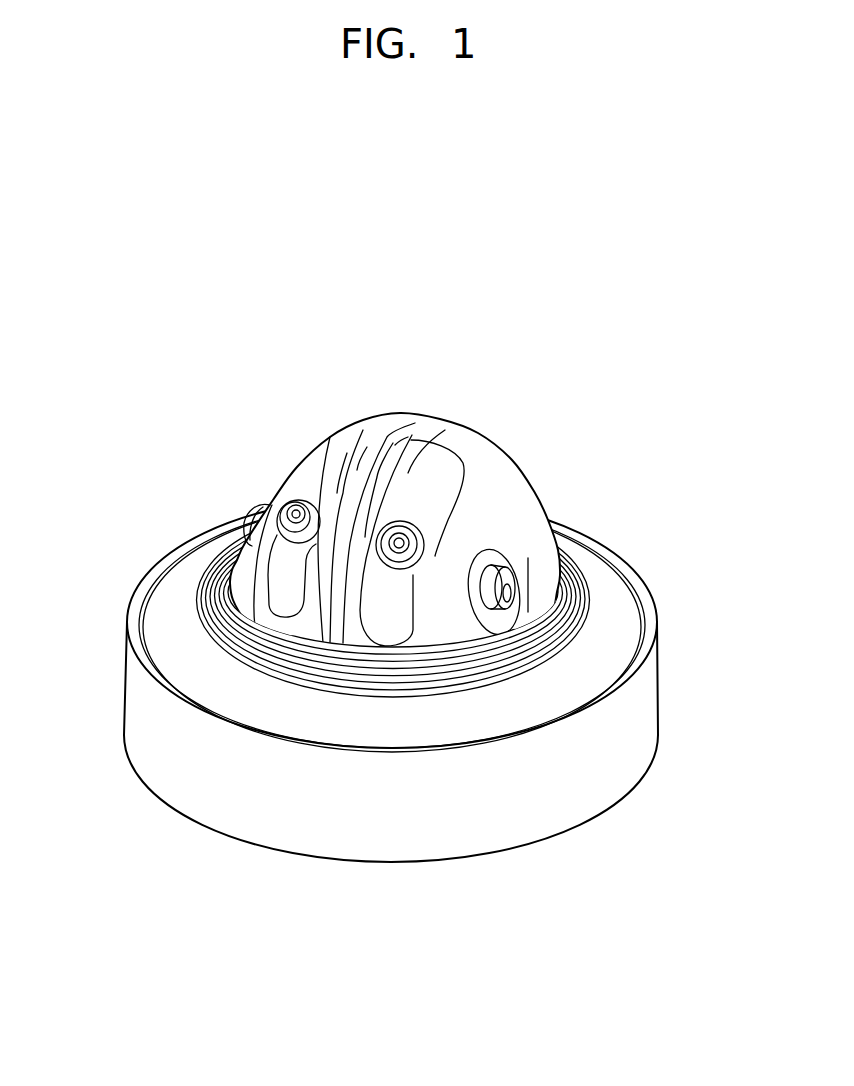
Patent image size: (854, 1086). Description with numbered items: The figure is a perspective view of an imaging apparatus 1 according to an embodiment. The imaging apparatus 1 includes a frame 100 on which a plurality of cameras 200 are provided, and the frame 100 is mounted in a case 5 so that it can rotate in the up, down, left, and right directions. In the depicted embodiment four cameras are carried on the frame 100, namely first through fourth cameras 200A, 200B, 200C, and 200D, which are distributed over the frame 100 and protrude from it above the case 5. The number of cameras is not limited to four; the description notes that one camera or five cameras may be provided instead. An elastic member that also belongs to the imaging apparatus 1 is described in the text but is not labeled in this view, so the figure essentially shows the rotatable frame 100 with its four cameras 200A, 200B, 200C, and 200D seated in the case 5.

The imaging apparatus 1 is at (77, 296).
The case 5 is at (611, 591).
The frame 100 is at (442, 591).
The camera 200 is at (222, 338).
The first camera 200A is at (254, 513).
The second camera 200B is at (294, 509).
The third camera 200C is at (401, 539).
The fourth camera 200D is at (506, 569).